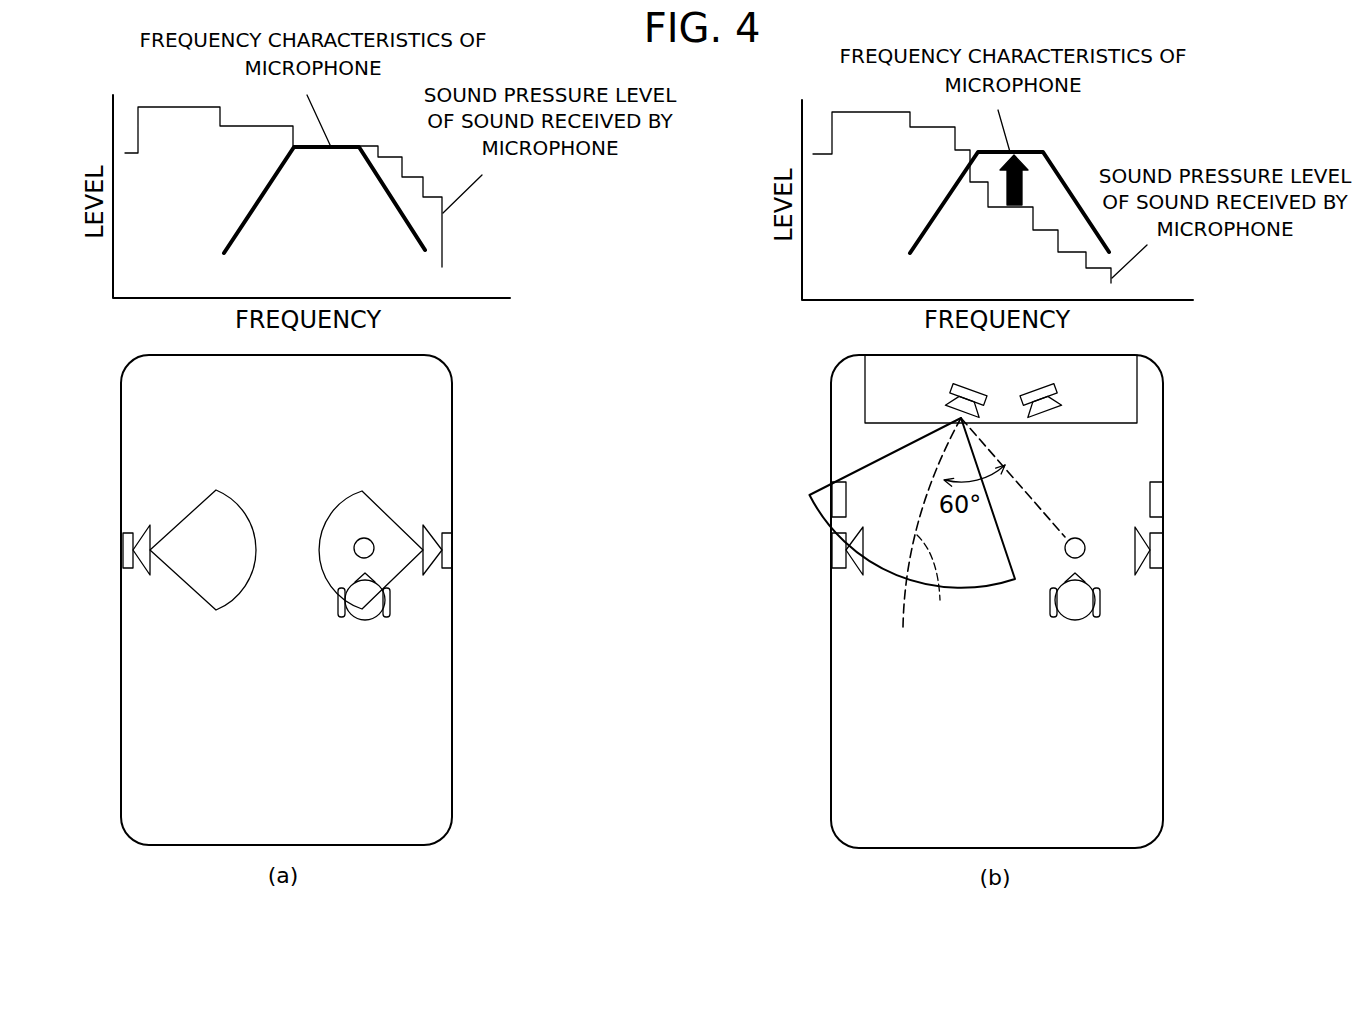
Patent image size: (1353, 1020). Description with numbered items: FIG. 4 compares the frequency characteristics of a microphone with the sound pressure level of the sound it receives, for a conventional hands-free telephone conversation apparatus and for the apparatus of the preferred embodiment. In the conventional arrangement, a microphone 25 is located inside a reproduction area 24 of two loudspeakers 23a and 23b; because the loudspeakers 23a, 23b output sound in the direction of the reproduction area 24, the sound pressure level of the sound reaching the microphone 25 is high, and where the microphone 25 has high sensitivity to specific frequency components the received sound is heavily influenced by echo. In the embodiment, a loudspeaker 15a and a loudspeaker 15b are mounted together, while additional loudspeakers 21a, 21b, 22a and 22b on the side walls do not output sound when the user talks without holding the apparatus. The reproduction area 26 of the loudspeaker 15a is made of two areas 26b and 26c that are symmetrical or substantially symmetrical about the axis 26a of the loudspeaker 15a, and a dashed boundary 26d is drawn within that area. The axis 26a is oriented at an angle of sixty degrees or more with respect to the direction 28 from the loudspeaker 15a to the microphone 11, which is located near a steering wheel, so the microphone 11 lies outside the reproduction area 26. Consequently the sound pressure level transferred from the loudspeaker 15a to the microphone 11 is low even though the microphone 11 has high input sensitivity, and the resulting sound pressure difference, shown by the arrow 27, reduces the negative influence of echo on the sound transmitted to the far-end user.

The microphone 11 is at (1082, 538).
The loudspeaker 15a is at (950, 407).
The loudspeaker 15b is at (1060, 403).
The loudspeaker 21a is at (830, 495).
The loudspeaker 21b is at (1167, 498).
The loudspeaker 22a is at (830, 548).
The loudspeaker 22b is at (1165, 550).
The loudspeaker 23a is at (123, 552).
The loudspeaker 23b is at (452, 550).
The reproduction area 24 is at (352, 526).
The microphone 25 is at (367, 538).
The reproduction area 26 is at (878, 490).
The axis 26a is at (923, 536).
The area 26b is at (892, 555).
The area 26c is at (973, 570).
The boundary within sound collection range 26d is at (937, 588).
The arrow 27 is at (1022, 183).
The direction 28 is at (1028, 492).